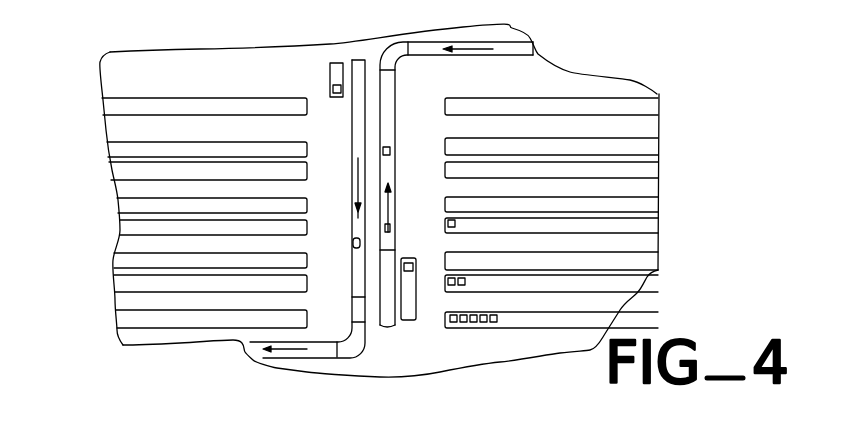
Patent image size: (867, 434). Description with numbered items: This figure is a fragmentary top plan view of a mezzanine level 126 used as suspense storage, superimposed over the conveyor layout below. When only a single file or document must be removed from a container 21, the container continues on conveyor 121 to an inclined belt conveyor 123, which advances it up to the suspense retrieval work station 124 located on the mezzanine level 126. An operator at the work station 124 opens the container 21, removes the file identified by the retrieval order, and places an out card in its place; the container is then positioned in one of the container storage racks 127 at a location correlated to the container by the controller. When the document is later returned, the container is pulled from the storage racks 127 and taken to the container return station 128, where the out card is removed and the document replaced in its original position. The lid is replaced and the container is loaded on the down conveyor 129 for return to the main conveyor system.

The container 21 is at (390, 147).
The conveyor 121 is at (493, 57).
The inclined belt conveyor 123 is at (417, 195).
The suspense retrieval work station 124 is at (420, 318).
The mezzanine level 126 is at (183, 72).
The container storage racks 127 is at (320, 143).
The container return station 128 is at (330, 74).
The down conveyor 129 is at (358, 58).